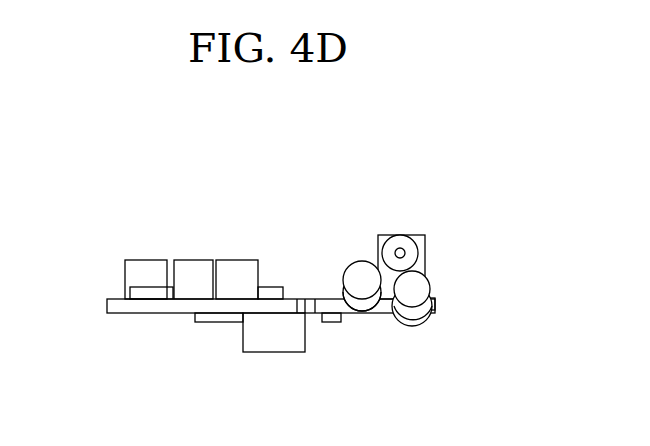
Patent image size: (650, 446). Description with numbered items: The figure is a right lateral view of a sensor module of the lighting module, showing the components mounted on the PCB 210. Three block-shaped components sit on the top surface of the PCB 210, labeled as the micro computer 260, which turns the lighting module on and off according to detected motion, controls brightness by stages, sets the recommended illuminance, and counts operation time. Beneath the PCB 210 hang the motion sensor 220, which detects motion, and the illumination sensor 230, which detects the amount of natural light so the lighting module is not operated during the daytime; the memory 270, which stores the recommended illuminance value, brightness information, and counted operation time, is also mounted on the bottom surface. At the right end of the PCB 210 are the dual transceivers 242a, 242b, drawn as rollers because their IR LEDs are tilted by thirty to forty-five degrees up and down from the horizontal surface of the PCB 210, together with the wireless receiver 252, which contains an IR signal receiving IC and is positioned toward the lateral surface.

The PCB 210 is at (115, 305).
The motion sensor 220 is at (272, 340).
The illumination sensor 230 is at (333, 322).
The dual transceiver 242a is at (362, 280).
The dual transceiver 242b is at (413, 309).
The wireless receiver 252 is at (408, 253).
The micro computer 260 is at (237, 270).
The memory 270 is at (208, 322).